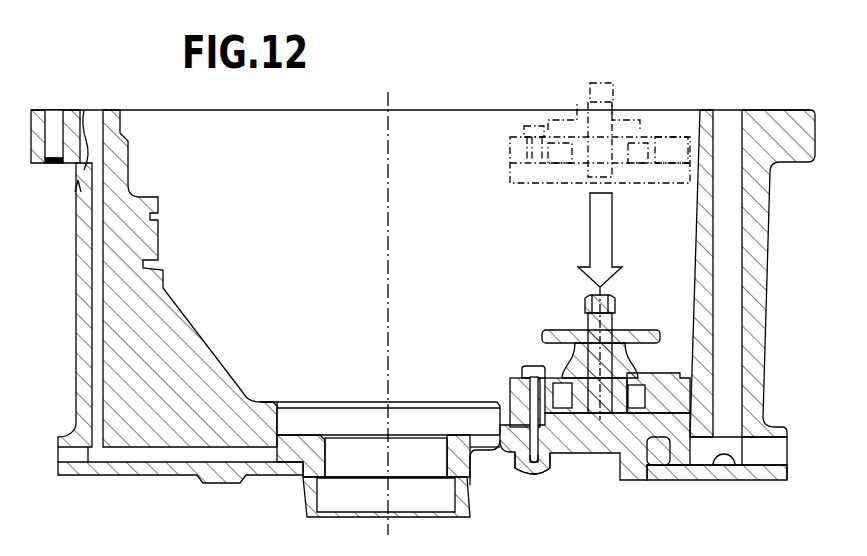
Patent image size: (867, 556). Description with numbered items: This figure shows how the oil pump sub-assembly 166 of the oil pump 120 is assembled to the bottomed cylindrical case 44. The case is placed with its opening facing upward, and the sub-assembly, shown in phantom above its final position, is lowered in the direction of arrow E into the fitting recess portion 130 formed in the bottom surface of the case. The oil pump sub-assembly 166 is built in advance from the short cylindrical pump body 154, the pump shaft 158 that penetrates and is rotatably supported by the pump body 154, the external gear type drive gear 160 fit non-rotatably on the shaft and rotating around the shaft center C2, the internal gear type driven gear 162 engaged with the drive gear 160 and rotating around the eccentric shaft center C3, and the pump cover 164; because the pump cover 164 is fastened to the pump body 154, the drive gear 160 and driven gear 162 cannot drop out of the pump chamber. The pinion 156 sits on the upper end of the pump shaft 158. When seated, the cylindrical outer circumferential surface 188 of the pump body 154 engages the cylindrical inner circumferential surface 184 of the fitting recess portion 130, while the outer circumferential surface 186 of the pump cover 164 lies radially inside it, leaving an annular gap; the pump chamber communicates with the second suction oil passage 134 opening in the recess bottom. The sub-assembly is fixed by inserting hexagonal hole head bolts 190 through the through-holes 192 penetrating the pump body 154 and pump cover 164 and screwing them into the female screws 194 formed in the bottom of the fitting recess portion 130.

The bottomed cylindrical case 44 is at (778, 118).
The oil pump 120 is at (512, 297).
The fitting recess portion 130 is at (554, 455).
The second suction oil passage 134 is at (735, 480).
The pump body 154 is at (558, 376).
The pinion 156 is at (565, 330).
The pump shaft 158 is at (618, 326).
The drive gear 160 is at (665, 410).
The driven gear 162 is at (642, 396).
The pump cover 164 is at (560, 180).
The oil pump sub-assembly 166 is at (581, 126).
The cylindrical inner circumferential surface 184 is at (518, 442).
The outer circumferential surface 186 is at (510, 412).
The cylindrical outer circumferential surface 188 is at (510, 390).
The hexagonal hole head bolt 190 is at (535, 372).
The through-hole 192 is at (523, 370).
The female screw 194 is at (515, 475).
The shaft center C2 is at (582, 427).
The shaft center C3 is at (617, 425).
The arrow E is at (605, 240).